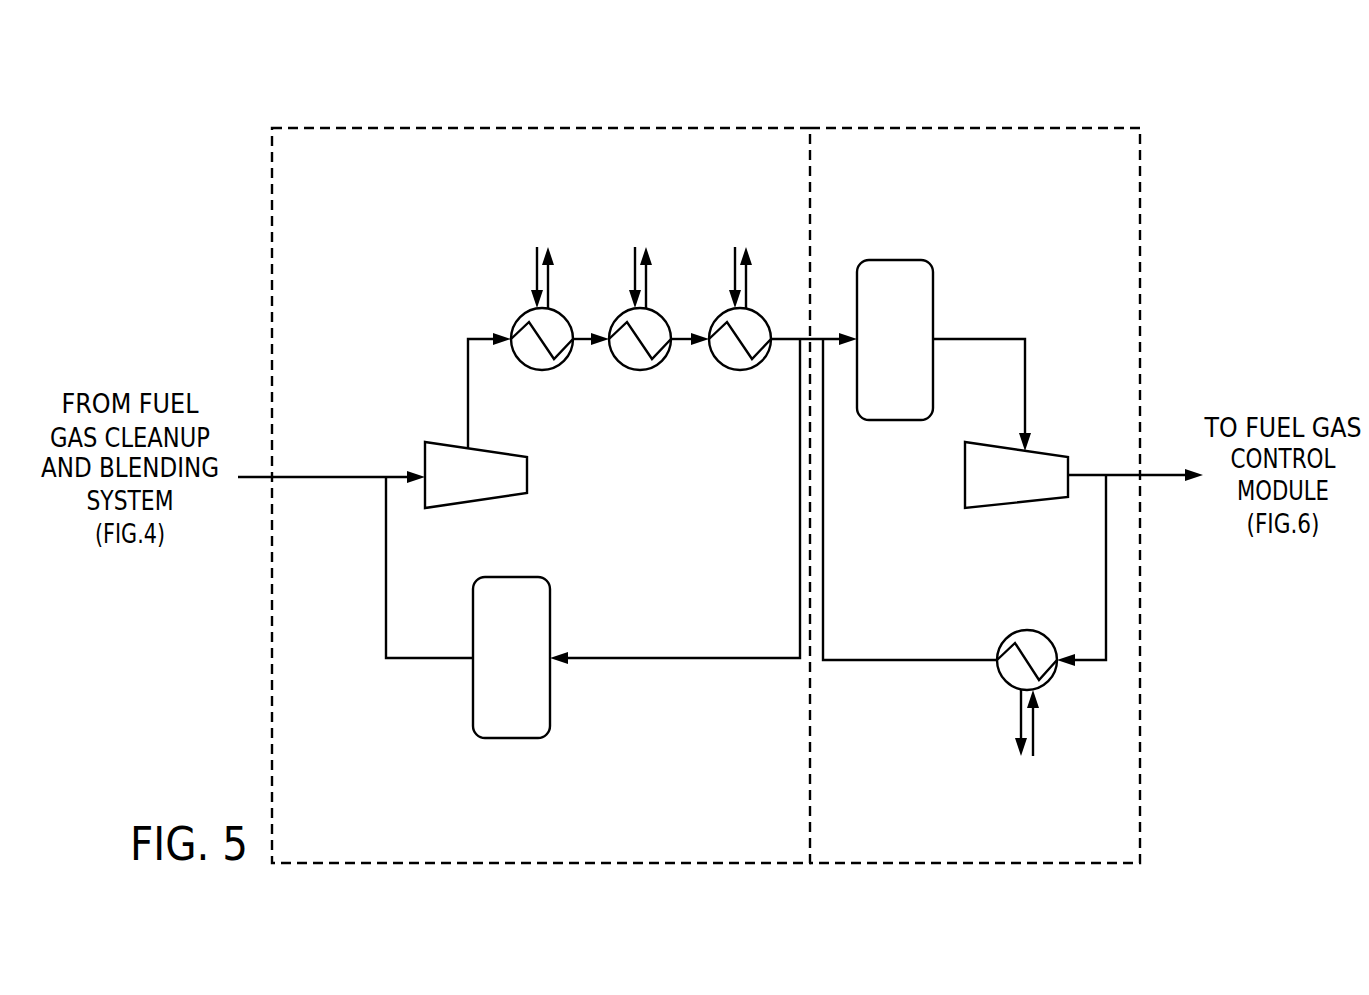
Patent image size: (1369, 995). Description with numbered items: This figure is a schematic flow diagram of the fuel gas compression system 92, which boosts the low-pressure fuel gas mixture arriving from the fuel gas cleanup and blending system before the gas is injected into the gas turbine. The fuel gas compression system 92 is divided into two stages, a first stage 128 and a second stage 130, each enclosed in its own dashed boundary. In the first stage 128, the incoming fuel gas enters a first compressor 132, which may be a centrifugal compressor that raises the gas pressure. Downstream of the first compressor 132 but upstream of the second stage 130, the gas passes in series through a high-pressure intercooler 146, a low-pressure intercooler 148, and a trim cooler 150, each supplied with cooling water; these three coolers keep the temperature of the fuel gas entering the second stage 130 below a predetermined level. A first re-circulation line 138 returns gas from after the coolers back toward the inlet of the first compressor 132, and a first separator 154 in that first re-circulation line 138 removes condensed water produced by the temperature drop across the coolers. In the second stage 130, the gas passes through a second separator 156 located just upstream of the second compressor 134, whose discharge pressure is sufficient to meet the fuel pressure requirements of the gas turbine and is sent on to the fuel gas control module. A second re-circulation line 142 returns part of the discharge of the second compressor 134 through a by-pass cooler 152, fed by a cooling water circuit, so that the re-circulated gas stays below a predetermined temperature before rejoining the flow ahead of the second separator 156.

The fuel gas compression system 92 is at (272, 68).
The first stage 128 is at (589, 128).
The second stage 130 is at (922, 128).
The first compressor 132 is at (527, 477).
The second compressor 134 is at (1056, 455).
The first re-circulation line 138 is at (670, 660).
The second re-circulation line 142 is at (908, 660).
The high-pressure intercooler 146 is at (545, 370).
The low-pressure intercooler 148 is at (643, 370).
The trim cooler 150 is at (743, 370).
The by-pass cooler 152 is at (1025, 631).
The first separator 154 is at (500, 577).
The second separator 156 is at (893, 260).